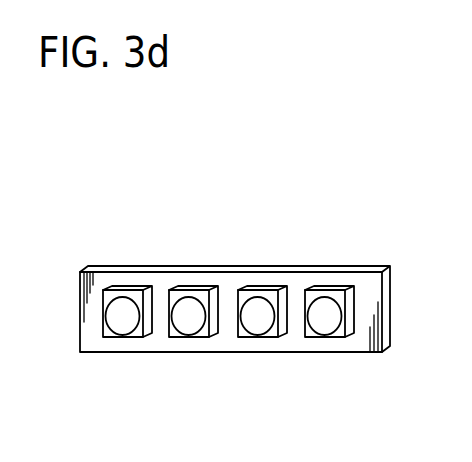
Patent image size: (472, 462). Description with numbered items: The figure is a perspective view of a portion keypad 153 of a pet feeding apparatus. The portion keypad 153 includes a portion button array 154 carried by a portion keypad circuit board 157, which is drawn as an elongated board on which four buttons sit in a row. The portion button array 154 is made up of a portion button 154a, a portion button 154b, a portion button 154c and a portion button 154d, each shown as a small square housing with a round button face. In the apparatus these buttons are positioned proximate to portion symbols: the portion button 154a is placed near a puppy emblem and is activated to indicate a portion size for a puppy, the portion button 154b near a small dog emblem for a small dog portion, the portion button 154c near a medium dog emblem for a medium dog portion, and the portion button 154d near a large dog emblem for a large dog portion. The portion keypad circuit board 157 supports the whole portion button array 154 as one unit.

The portion keypad 153 is at (106, 185).
The portion button array 154 is at (72, 372).
The portion button 154a is at (123, 305).
The portion button 154b is at (193, 308).
The portion button 154c is at (262, 308).
The portion button 154d is at (328, 308).
The portion keypad circuit board 157 is at (296, 342).